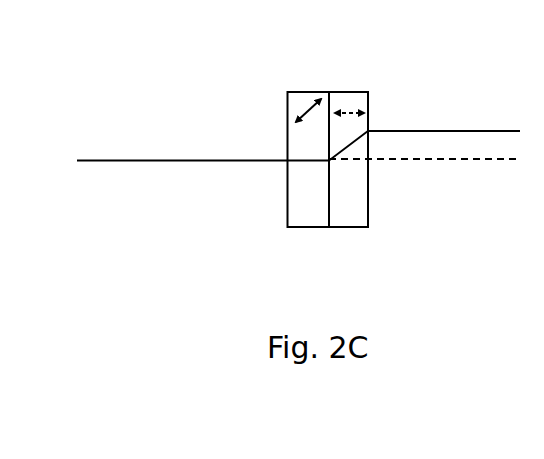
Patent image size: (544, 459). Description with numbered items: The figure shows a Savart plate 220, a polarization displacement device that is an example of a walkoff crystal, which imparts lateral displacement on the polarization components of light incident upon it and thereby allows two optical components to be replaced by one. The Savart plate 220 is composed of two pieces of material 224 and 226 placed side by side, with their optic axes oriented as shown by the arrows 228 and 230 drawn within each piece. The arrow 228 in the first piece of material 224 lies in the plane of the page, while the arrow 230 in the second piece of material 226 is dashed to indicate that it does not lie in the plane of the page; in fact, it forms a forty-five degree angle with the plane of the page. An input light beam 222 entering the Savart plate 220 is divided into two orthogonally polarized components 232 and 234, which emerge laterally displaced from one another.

The Savart plate 220 is at (175, 94).
The input light beam 222 is at (93, 168).
The first piece of material 224 is at (298, 196).
The second piece of material 226 is at (350, 196).
The arrow 228 is at (297, 101).
The dashed arrow 230 is at (348, 107).
The orthogonally polarized component 232 is at (484, 122).
The orthogonally polarized component 234 is at (485, 165).